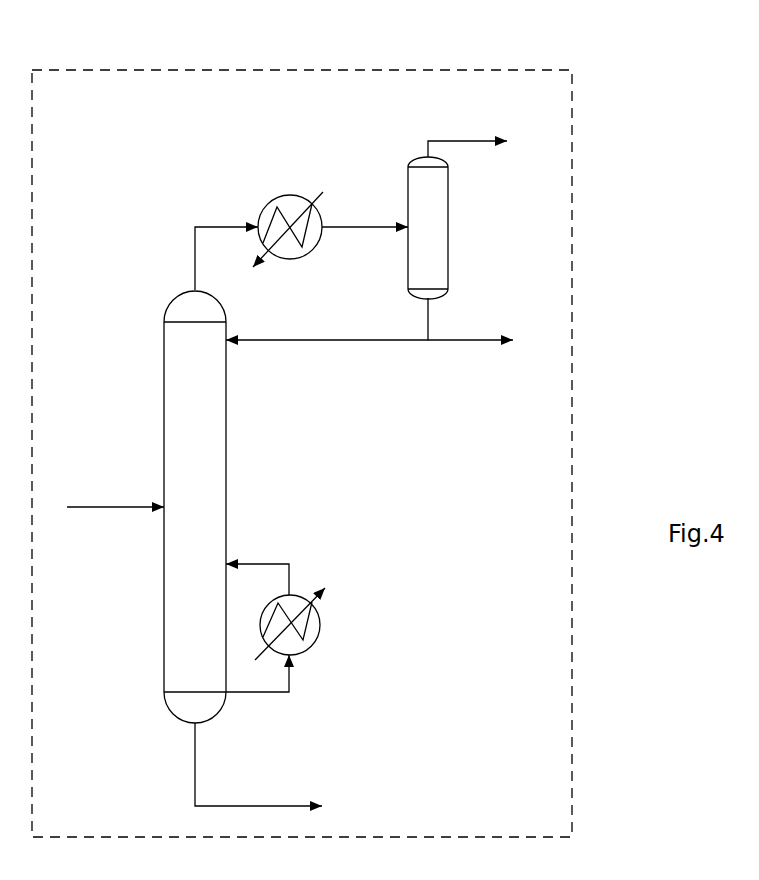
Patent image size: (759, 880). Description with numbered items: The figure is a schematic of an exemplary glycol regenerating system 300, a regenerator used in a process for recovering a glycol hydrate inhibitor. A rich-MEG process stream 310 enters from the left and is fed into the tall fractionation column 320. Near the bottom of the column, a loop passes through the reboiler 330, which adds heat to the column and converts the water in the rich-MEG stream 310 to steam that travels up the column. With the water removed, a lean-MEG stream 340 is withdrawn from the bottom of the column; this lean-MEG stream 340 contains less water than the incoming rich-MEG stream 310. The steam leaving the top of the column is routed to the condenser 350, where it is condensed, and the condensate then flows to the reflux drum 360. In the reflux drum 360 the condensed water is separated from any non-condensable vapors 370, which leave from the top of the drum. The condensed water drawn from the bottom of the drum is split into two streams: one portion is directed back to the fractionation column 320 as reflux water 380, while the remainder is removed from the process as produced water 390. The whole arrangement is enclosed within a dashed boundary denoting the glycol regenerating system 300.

The glycol regenerating system 300 is at (278, 70).
The rich-MEG process stream 310 is at (76, 505).
The fractionation column 320 is at (163, 378).
The reboiler 330 is at (321, 625).
The lean-MEG stream 340 is at (292, 805).
The condenser 350 is at (285, 195).
The reflux drum 360 is at (448, 235).
The non-condensable vapors 370 is at (465, 140).
The reflux water 380 is at (294, 342).
The produced water 390 is at (487, 342).